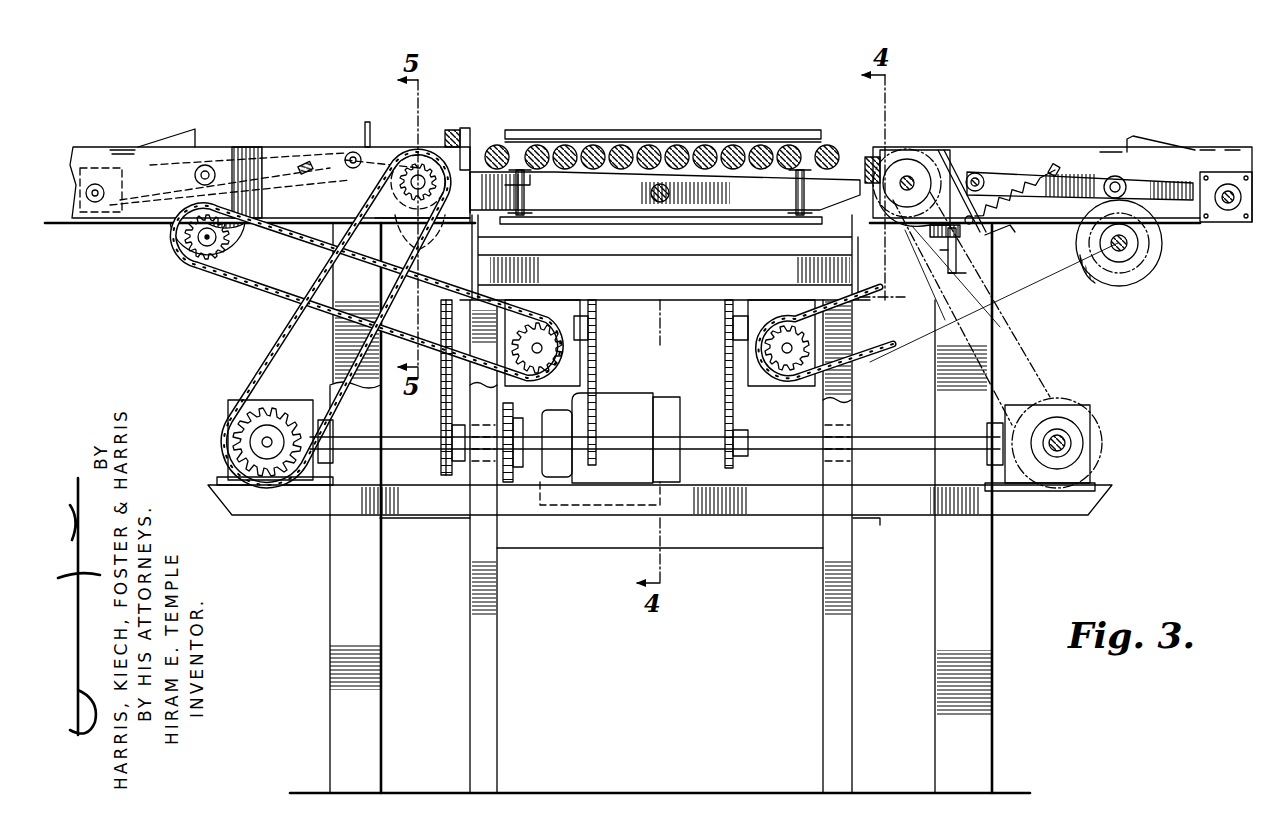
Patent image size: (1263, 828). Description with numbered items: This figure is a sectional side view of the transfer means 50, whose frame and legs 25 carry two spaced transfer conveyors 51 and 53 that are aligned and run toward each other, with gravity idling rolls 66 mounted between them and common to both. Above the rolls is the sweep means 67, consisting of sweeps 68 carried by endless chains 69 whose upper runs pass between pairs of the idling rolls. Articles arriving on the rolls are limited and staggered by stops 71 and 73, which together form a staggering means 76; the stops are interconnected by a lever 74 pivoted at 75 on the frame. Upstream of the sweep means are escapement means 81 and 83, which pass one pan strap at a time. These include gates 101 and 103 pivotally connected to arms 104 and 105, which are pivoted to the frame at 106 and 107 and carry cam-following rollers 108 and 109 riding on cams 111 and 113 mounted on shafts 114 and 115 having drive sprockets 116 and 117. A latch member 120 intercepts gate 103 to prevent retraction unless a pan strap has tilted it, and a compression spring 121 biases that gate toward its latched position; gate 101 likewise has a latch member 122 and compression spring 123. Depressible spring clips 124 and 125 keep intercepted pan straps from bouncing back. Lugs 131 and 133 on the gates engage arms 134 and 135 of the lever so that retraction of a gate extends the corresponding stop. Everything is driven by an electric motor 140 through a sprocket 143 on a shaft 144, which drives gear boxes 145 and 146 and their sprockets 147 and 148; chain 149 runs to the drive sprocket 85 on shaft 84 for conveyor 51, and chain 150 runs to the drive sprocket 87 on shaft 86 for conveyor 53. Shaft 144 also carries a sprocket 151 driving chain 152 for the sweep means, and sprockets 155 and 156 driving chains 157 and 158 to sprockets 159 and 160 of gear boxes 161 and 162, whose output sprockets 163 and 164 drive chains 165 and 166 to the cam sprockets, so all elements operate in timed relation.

The frame 25 is at (384, 612).
The transfer means 50 is at (676, 98).
The transfer conveyor 51 is at (240, 145).
The transfer conveyor 53 is at (1082, 145).
The idling rolls 66 is at (538, 146).
The sweep means 67 is at (686, 132).
The sweeps 68 is at (640, 131).
The endless chains 69 is at (518, 217).
The stop 71 is at (873, 150).
The stop 73 is at (465, 130).
The lever 74 is at (520, 190).
The pivot 75 is at (661, 204).
The staggering means 76 is at (605, 211).
The escapement means 81 is at (362, 120).
The escapement means 83 is at (948, 142).
The shaft 84 is at (421, 176).
The drive sprocket 85 is at (408, 152).
The shaft 86 is at (912, 175).
The drive sprocket 87 is at (903, 160).
The gate 101 is at (352, 150).
The gate 103 is at (976, 172).
The arm 104 is at (255, 150).
The arm 105 is at (1045, 172).
The pivot 106 is at (100, 202).
The pivot 107 is at (1228, 211).
The cam-following roller 108 is at (205, 165).
The cam-following roller 109 is at (1124, 178).
The cam 111 is at (195, 270).
The cam 113 is at (1135, 273).
The shaft 114 is at (198, 240).
The shaft 115 is at (1126, 245).
The drive sprocket 116 is at (190, 255).
The drive sprocket 117 is at (1105, 277).
The latch member 120 is at (970, 255).
The compression spring 121 is at (1013, 226).
The latch member 122 is at (360, 185).
The compression spring 123 is at (318, 158).
The spring clip 124 is at (185, 140).
The spring clip 125 is at (1128, 137).
The lug 131 is at (390, 160).
The lug 133 is at (996, 198).
The arm 134 is at (410, 218).
The arm 135 is at (905, 250).
The electric motor 140 is at (624, 398).
The sprocket 143 is at (513, 425).
The shaft 144 is at (405, 450).
The gear box 145 is at (305, 482).
The gear box 146 is at (1091, 478).
The sprocket 147 is at (236, 440).
The sprocket 148 is at (1046, 398).
The chain 149 is at (262, 360).
The chain 150 is at (1060, 360).
The sprocket 151 is at (456, 462).
The chain 152 is at (441, 410).
The sprocket 155 is at (590, 483).
The sprocket 156 is at (746, 432).
The chain 157 is at (597, 352).
The chain 158 is at (724, 355).
The sprocket 159 is at (589, 325).
The sprocket 160 is at (732, 328).
The gear box 161 is at (566, 310).
The gear box 162 is at (755, 320).
The sprocket 163 is at (534, 322).
The sprocket 164 is at (786, 322).
The chain 165 is at (275, 290).
The chain 166 is at (878, 352).